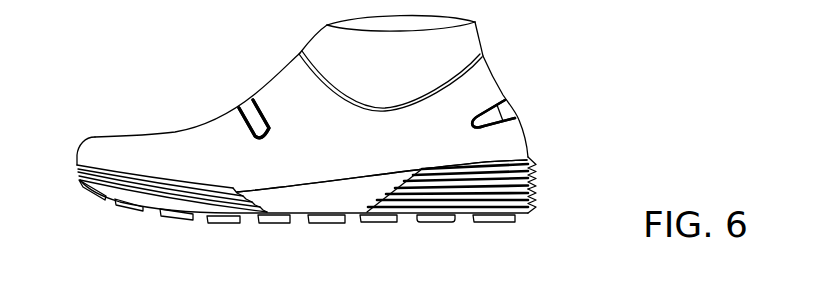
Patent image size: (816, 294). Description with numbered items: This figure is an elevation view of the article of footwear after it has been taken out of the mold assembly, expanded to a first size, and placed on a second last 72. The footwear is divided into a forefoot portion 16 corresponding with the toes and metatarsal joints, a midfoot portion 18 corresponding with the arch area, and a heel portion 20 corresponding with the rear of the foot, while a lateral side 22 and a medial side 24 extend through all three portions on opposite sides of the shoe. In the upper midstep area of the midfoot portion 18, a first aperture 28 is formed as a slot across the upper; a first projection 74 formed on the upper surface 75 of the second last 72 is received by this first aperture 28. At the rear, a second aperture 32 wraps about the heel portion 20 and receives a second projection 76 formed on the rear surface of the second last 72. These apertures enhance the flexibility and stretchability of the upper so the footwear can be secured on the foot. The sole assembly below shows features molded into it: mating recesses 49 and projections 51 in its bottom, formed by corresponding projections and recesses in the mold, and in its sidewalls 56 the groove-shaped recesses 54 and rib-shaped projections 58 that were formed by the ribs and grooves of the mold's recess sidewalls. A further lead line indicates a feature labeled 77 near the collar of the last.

The forefoot portion 16 is at (127, 163).
The midfoot portion 18 is at (337, 161).
The heel portion 20 is at (453, 148).
The lateral side 22 is at (175, 130).
The medial side 24 is at (277, 170).
The first aperture 28 is at (253, 117).
The second aperture 32 is at (505, 119).
The recesses 49 is at (352, 217).
The projections 51 is at (175, 219).
The recesses 54 is at (534, 172).
The sidewalls 56 is at (372, 184).
The projections 58 is at (533, 198).
The second last 72 is at (470, 33).
The first projection 74 is at (242, 107).
The upper surface 75 is at (313, 43).
The second projection 76 is at (512, 108).
The collar binding 77 is at (484, 51).